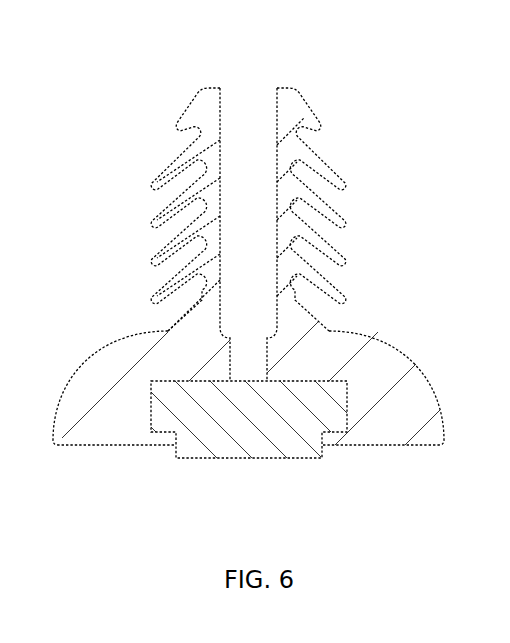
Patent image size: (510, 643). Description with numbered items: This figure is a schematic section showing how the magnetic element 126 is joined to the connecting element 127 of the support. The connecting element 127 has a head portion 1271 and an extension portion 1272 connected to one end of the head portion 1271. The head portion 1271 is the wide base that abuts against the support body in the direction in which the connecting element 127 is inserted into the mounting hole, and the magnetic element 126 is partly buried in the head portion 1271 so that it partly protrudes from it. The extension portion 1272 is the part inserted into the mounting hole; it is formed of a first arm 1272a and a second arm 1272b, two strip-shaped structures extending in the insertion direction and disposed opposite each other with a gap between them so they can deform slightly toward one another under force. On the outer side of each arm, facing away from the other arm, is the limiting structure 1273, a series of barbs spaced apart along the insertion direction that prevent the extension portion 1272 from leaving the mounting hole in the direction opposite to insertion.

The magnetic element 126 is at (247, 419).
The connecting element 127 is at (395, 272).
The head portion 1271 is at (385, 420).
The extension portion 1272 is at (254, 201).
The first arm 1272a is at (285, 105).
The second arm 1272b is at (221, 176).
The limiting structure 1273 is at (158, 262).